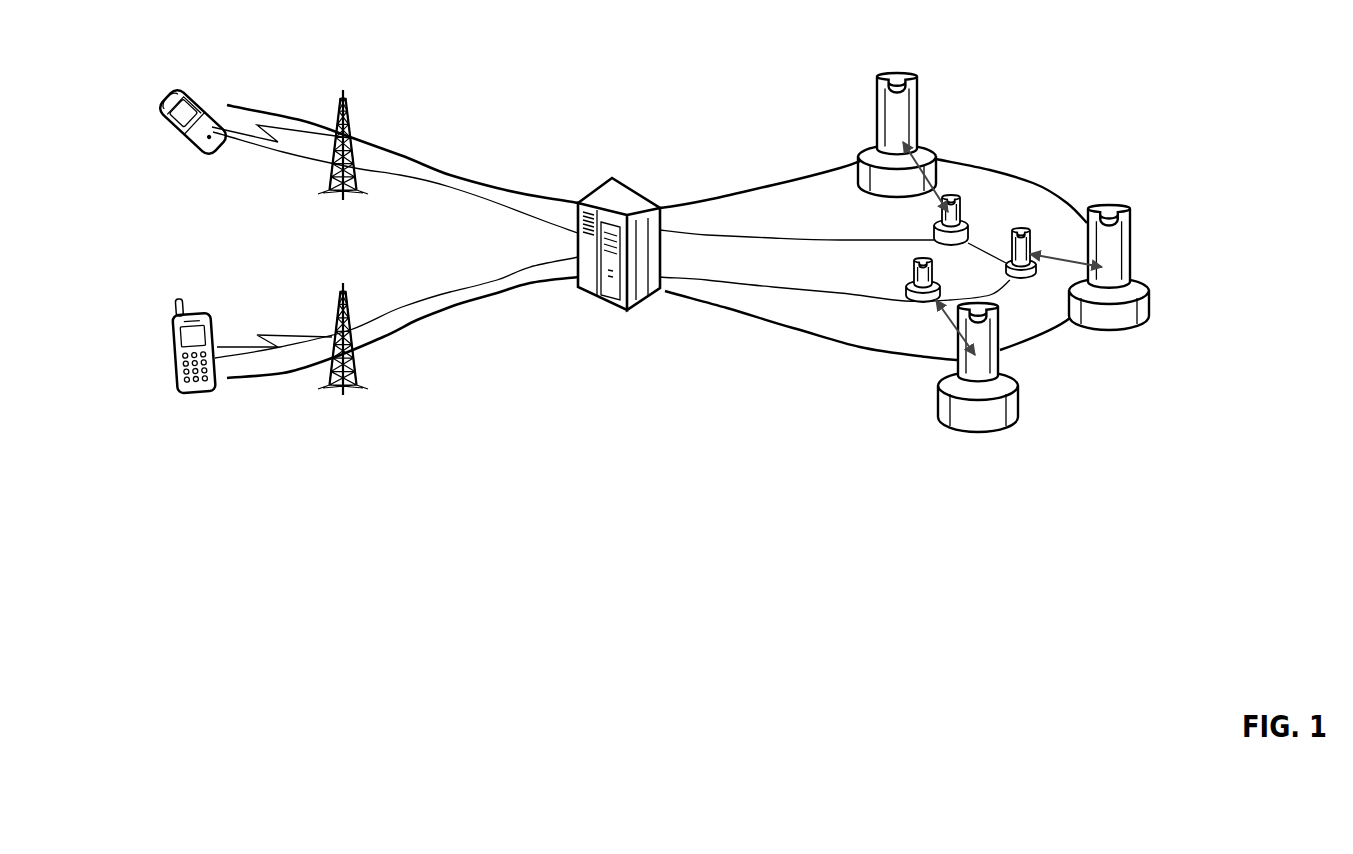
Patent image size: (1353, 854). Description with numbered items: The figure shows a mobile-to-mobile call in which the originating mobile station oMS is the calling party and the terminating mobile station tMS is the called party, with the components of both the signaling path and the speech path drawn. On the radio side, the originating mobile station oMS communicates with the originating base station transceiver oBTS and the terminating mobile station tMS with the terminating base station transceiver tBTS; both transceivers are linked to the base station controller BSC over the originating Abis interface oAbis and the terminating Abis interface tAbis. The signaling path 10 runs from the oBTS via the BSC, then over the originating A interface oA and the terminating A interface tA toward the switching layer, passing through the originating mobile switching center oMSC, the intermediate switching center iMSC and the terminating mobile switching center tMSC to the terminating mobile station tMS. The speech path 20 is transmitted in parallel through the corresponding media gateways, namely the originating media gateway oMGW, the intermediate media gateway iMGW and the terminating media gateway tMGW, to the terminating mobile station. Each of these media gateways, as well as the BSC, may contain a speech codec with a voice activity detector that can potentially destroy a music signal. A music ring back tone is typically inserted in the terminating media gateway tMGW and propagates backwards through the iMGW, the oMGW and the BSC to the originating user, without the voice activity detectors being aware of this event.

The signaling path 10 is at (417, 320).
The speech path 20 is at (402, 307).
The originating mobile station oMS is at (192, 136).
The terminating mobile station tMS is at (194, 331).
The originating base station transceiver oBTS is at (356, 145).
The terminating base station transceiver tBTS is at (358, 343).
The base station controller BSC is at (619, 266).
The originating Abis interface oAbis is at (395, 183).
The terminating Abis interface tAbis is at (475, 267).
The originating A interface oA is at (760, 187).
The terminating A interface tA is at (811, 325).
The originating mobile switching center oMSC is at (848, 135).
The terminating mobile switching center tMSC is at (926, 367).
The intermediate switching center iMSC is at (1108, 250).
The originating media gateway oMGW is at (915, 220).
The terminating media gateway tMGW is at (895, 280).
The intermediate media gateway iMGW is at (1030, 264).